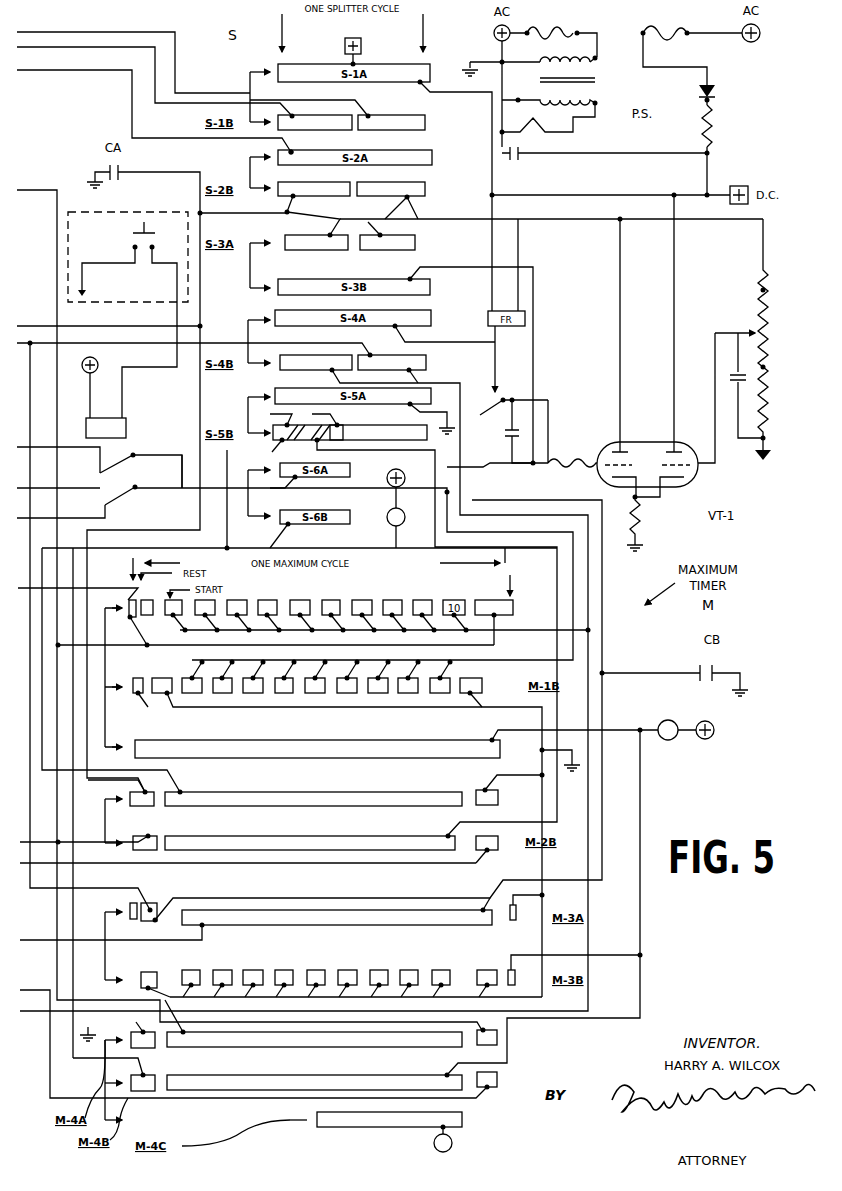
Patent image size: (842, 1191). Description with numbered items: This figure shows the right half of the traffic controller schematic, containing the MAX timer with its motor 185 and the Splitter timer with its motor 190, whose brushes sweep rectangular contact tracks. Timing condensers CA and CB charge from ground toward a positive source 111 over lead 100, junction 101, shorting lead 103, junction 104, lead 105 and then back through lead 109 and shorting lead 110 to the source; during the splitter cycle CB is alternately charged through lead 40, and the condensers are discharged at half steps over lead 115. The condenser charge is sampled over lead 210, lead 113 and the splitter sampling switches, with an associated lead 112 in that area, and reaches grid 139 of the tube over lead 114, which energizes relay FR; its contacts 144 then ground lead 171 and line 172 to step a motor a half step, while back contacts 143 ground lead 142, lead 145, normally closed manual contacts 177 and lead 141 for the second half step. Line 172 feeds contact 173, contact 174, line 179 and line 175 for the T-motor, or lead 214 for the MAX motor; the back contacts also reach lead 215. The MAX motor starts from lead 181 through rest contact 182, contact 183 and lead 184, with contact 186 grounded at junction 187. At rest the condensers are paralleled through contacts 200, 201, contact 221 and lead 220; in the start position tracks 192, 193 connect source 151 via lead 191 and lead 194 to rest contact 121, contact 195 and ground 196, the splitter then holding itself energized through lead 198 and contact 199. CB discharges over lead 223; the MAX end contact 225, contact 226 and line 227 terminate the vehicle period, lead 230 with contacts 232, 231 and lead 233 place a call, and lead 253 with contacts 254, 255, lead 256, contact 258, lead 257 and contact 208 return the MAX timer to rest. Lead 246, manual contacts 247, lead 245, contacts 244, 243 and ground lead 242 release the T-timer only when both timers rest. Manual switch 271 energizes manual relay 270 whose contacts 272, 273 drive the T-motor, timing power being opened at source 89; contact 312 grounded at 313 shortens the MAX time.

The lead 40 is at (52, 34).
The lead 109 is at (50, 50).
The lead 105 is at (50, 74).
The shorting lead 110 is at (248, 77).
The positive source 111 is at (364, 36).
The junction 104 is at (294, 151).
The shorting lead 103 is at (248, 162).
The junction 101 is at (243, 205).
The lead 100 is at (265, 212).
The conductor 112 is at (290, 218).
The lead 113 is at (395, 222).
The lead 210 is at (427, 219).
The lead 114 is at (436, 267).
The lead 253 is at (24, 192).
The manual switch 271 is at (124, 240).
The lead 115 is at (91, 326).
The line 175 is at (96, 343).
The line 179 is at (34, 412).
The manual relay 270 is at (130, 424).
The manual contact 272 is at (110, 457).
The manual contact 273 is at (63, 452).
The lead 145 is at (166, 442).
The lead 141 is at (64, 478).
The manual contacts 177 is at (111, 478).
The lead 246 is at (158, 494).
The manual contacts 247 is at (110, 508).
The lead 198 is at (232, 524).
The lead 245 is at (273, 546).
The contact 195 is at (306, 338).
The rest contact 121 is at (321, 414).
The contact 199 is at (346, 429).
The ground 196 is at (448, 406).
The lead 171 is at (435, 344).
The line 172 is at (434, 381).
The FR relay contacts 144 is at (492, 396).
The FR back contacts 143 is at (502, 430).
The lead 142 is at (498, 470).
The grid 139 is at (566, 460).
The source 151 is at (389, 471).
The splitter motor 190 is at (384, 530).
The source 89 is at (692, 24).
The lead 191 is at (128, 560).
The lead 181 is at (122, 596).
The rest contact 182 is at (148, 630).
The lead 257 is at (117, 649).
The contact 186 is at (163, 706).
The contact 183 is at (186, 738).
The lead 194 is at (517, 544).
The contact 258 is at (513, 596).
The lead 214 is at (504, 631).
The lead 215 is at (575, 620).
The contact 208 is at (484, 692).
The lead 220 is at (605, 692).
The lead 184 is at (615, 729).
The MAX motor 185 is at (672, 746).
The junction 187 is at (542, 754).
The contact 225 is at (480, 780).
The track 192 is at (191, 788).
The track 193 is at (206, 832).
The rest position contact 201 is at (148, 804).
The rest position contact 200 is at (168, 834).
The contact 226 is at (494, 858).
The line 227 is at (388, 868).
The contact 174 is at (167, 902).
The contact 173 is at (166, 974).
The contact 221 is at (347, 936).
The lead 223 is at (473, 986).
The lead 256 is at (645, 992).
The lead 233 is at (48, 1011).
The ground lead 242 is at (128, 1028).
The contact 243 is at (149, 1044).
The contact 254 is at (279, 1046).
The contact 231 is at (475, 1040).
The contact 255 is at (211, 1070).
The contact 244 is at (149, 1089).
The contact 232 is at (487, 1098).
The lead 230 is at (52, 1096).
The contact 312 is at (353, 1132).
The ground 313 is at (436, 1141).